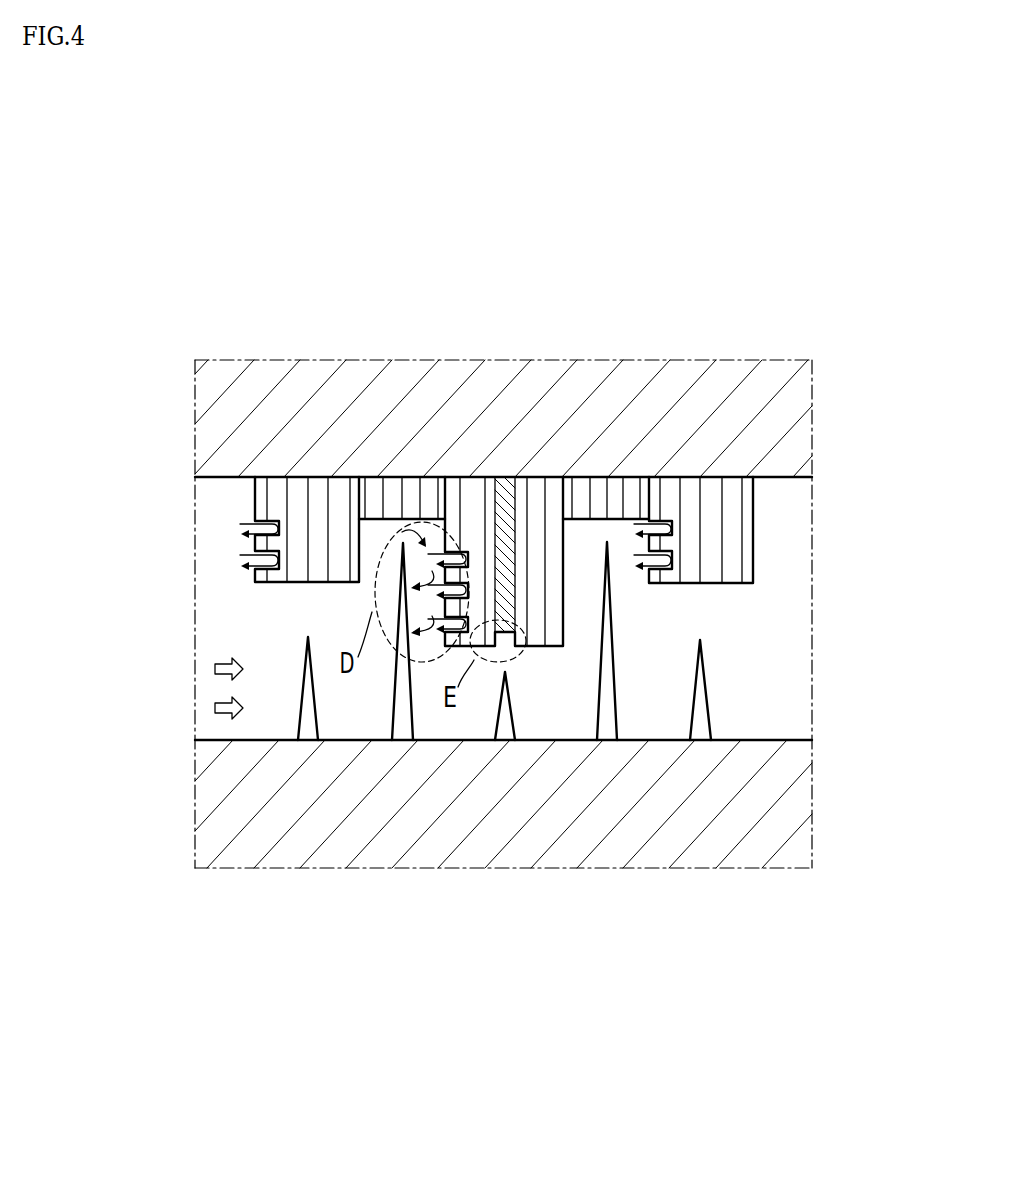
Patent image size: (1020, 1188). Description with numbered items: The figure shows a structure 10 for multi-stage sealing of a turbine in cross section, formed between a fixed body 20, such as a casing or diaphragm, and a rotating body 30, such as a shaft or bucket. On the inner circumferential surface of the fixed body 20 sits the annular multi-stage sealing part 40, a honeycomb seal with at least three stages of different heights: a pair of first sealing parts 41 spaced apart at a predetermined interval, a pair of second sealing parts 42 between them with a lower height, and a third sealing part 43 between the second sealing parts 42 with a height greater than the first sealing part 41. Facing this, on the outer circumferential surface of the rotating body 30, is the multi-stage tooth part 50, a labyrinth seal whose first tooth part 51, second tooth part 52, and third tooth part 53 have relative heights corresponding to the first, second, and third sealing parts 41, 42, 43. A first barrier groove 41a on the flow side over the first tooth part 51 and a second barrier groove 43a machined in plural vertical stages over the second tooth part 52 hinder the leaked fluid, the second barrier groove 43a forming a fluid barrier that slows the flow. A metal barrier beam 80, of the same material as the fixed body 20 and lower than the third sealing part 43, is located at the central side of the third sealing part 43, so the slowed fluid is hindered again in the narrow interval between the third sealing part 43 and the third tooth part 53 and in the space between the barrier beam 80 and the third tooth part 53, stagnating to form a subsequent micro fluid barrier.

The heat exchanger 10 is at (277, 265).
The fixed body 20 is at (765, 425).
The rotating body 30 is at (762, 800).
The multi-stage sealing part 40 is at (436, 433).
The first sealing part 41 is at (318, 517).
The first barrier groove 41a is at (268, 522).
The second sealing part 42 is at (412, 503).
The third sealing part 43 is at (472, 500).
The second barrier groove 43a is at (464, 550).
The barrier beam 80 is at (513, 535).
The multi-stage tooth part 50 is at (495, 782).
The first tooth part 51 is at (300, 706).
The second tooth part 52 is at (401, 690).
The third tooth part 53 is at (500, 715).